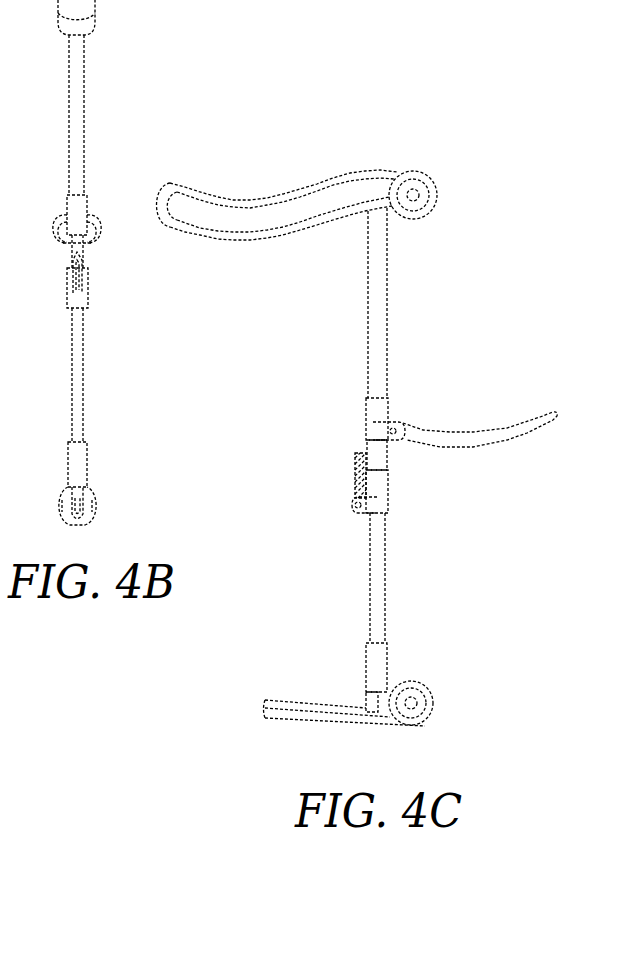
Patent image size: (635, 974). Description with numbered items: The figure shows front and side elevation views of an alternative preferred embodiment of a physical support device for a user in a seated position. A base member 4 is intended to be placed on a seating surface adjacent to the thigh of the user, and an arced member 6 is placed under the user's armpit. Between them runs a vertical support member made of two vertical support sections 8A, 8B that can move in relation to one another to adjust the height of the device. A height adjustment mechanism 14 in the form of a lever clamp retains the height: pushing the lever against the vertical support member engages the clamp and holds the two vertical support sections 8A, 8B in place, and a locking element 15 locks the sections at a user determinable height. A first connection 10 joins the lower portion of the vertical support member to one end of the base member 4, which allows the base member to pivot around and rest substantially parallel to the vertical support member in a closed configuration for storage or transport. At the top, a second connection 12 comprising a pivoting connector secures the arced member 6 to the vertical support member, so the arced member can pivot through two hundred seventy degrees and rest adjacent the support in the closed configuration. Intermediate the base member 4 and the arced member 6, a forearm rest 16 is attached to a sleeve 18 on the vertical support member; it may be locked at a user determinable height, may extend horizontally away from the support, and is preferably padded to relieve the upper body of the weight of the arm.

The base member 4 is at (310, 723).
The arced member 6 is at (278, 197).
The vertical support section 8A is at (388, 318).
The vertical support section 8B is at (386, 578).
The first connection member 10 is at (422, 727).
The second connection member 12 is at (419, 172).
The adjustment mechanism 14 is at (389, 490).
The locking element 15 is at (354, 486).
The forearm rest 16 is at (525, 440).
The sleeve 18 is at (366, 422).